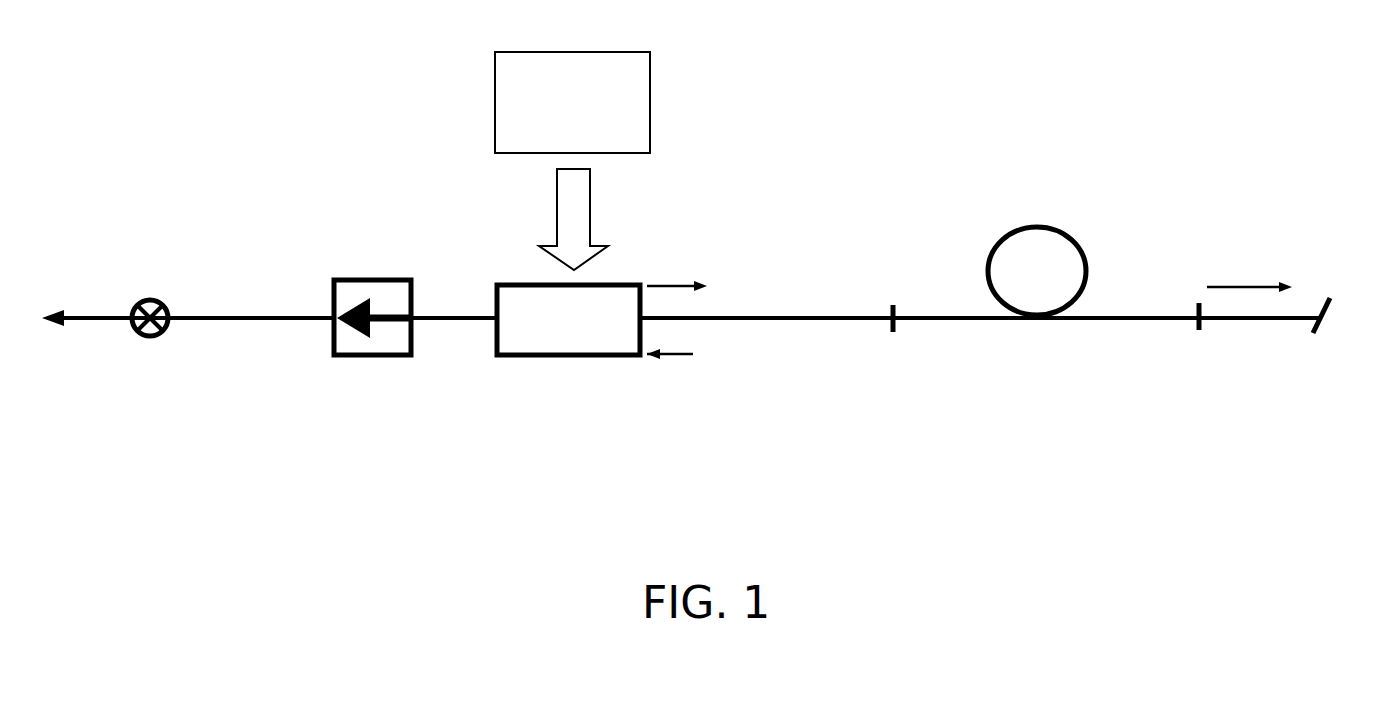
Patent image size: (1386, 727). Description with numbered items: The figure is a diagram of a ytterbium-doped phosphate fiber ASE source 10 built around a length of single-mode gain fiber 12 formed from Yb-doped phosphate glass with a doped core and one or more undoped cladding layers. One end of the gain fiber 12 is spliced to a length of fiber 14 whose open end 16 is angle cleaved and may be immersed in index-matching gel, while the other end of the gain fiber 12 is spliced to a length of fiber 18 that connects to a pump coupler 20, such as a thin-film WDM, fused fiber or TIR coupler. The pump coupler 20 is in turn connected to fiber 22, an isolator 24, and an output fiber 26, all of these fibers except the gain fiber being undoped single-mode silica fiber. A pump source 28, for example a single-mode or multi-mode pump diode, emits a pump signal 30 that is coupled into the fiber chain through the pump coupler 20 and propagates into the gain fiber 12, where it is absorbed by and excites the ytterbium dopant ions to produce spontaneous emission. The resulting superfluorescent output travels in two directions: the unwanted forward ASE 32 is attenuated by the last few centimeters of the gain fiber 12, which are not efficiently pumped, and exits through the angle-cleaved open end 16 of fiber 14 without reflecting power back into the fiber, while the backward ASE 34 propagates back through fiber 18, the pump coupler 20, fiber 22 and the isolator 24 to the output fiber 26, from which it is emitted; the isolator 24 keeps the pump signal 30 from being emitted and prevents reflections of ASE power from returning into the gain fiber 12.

The fiber ASE source 10 is at (352, 132).
The single-mode gain fiber 12 is at (1048, 227).
The fiber 14 is at (1257, 318).
The open end 16 is at (1330, 318).
The fiber 18 is at (798, 310).
The pump coupler 20 is at (578, 357).
The fiber 22 is at (457, 318).
The isolator 24 is at (367, 357).
The output fiber 26 is at (235, 318).
The pump source 28 is at (650, 93).
The pump signal 30 is at (593, 223).
The forward ASE 32 is at (1237, 287).
The backward ASE 34 is at (97, 320).